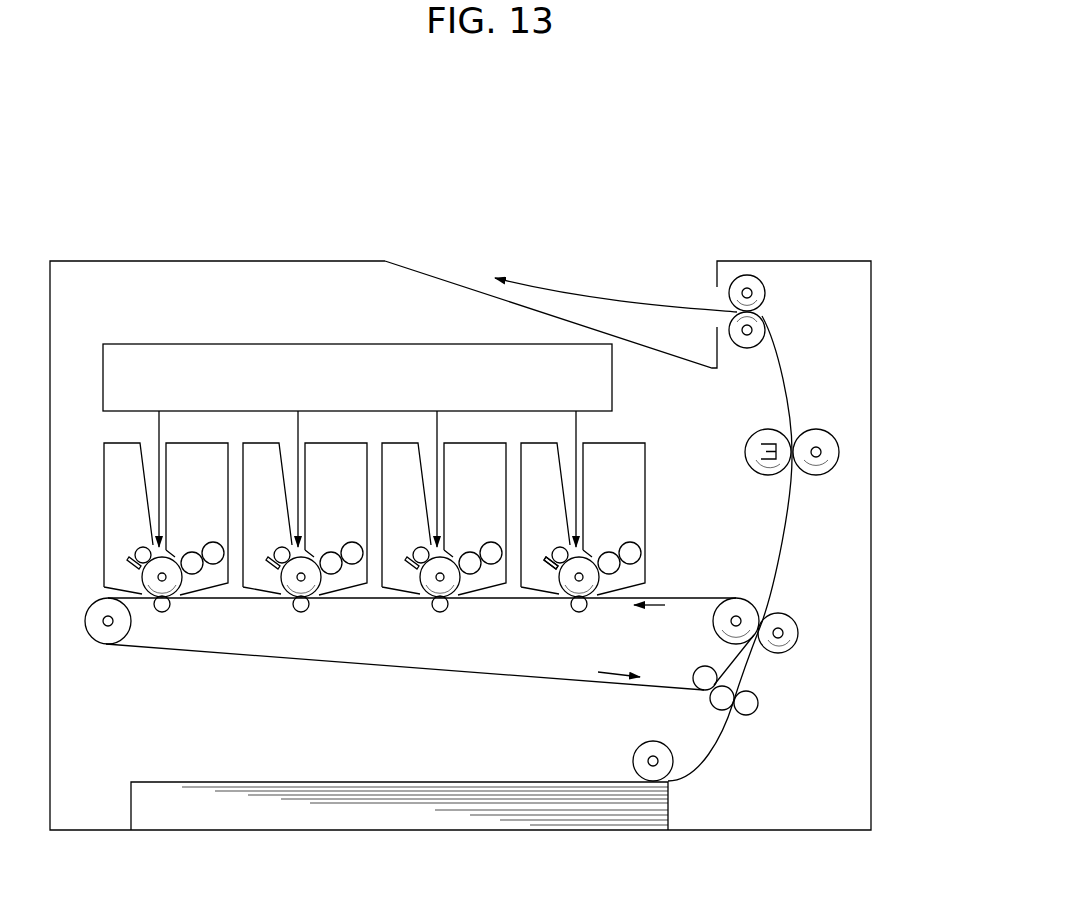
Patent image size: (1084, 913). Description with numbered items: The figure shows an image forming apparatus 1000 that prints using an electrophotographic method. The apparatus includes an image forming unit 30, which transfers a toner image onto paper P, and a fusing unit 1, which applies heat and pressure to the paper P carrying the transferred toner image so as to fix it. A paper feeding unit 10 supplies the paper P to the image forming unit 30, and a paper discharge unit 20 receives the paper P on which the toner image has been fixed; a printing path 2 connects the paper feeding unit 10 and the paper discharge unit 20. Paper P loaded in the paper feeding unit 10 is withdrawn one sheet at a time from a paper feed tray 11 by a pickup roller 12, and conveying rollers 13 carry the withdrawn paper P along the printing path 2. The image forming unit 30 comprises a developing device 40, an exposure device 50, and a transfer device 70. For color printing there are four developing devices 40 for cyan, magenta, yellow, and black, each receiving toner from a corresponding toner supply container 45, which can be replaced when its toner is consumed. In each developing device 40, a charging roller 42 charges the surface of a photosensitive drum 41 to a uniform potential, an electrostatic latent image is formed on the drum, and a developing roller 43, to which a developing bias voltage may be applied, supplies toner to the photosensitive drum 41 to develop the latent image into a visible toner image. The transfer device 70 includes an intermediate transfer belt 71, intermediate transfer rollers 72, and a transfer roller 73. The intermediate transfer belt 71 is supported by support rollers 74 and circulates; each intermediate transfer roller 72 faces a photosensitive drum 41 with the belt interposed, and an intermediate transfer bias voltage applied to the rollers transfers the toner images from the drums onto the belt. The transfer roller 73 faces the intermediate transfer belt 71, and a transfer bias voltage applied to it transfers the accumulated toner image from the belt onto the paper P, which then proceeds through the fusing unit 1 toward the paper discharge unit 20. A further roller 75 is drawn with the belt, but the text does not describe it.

The image forming apparatus 1000 is at (847, 232).
The exposure device 50 is at (197, 343).
The printing path 2 is at (587, 297).
The paper discharge unit 20 is at (696, 338).
The developing device 40 is at (419, 537).
The fusing unit 1 is at (845, 427).
The image forming unit 30 is at (849, 439).
The developing roller 43 is at (558, 546).
The charging roller 42 is at (612, 551).
The toner supply container 45 is at (520, 582).
The photosensitive drum 41 is at (558, 582).
The intermediate transfer roller 72 is at (585, 611).
The support roller 74 is at (728, 608).
The transfer roller 73 is at (788, 614).
The transfer device 70 is at (507, 629).
The tension roller 75 is at (698, 669).
The conveying rollers 13 is at (770, 702).
The intermediate transfer belt 71 is at (233, 655).
The pickup roller 12 is at (643, 745).
The paper feeding unit 10 is at (457, 768).
The paper feed tray 11 is at (668, 812).
The paper P is at (442, 782).